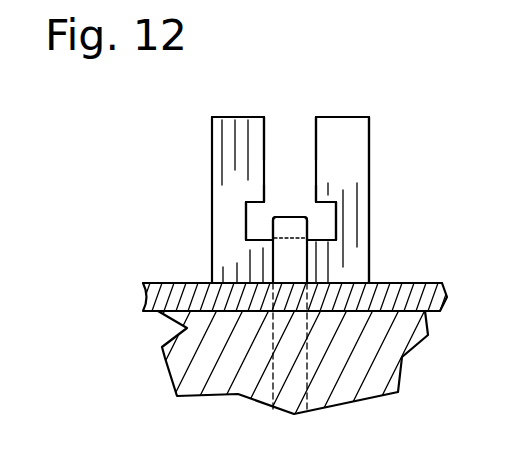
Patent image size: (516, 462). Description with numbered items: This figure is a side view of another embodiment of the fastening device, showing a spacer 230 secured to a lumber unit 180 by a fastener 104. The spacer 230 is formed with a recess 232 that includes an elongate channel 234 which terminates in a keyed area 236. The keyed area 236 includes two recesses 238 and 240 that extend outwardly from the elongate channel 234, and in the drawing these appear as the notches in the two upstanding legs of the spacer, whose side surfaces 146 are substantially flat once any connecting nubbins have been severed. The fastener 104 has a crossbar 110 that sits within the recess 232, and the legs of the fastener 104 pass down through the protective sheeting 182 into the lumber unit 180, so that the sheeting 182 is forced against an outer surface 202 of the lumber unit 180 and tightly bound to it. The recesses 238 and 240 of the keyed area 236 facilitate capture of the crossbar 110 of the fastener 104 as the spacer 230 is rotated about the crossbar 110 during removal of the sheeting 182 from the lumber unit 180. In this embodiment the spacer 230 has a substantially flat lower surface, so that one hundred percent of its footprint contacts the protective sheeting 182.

The fastener 104 is at (288, 262).
The crossbar 110 is at (279, 216).
The side surfaces 146 is at (212, 145).
The lumber unit 180 is at (420, 325).
The protective sheeting 182 is at (423, 288).
The outer surface 202 is at (165, 283).
The spacer 230 is at (349, 117).
The recess 232 is at (264, 133).
The elongate channel 234 is at (316, 129).
The keyed area 236 is at (259, 234).
The recess 238 is at (260, 204).
The recess 240 is at (322, 203).